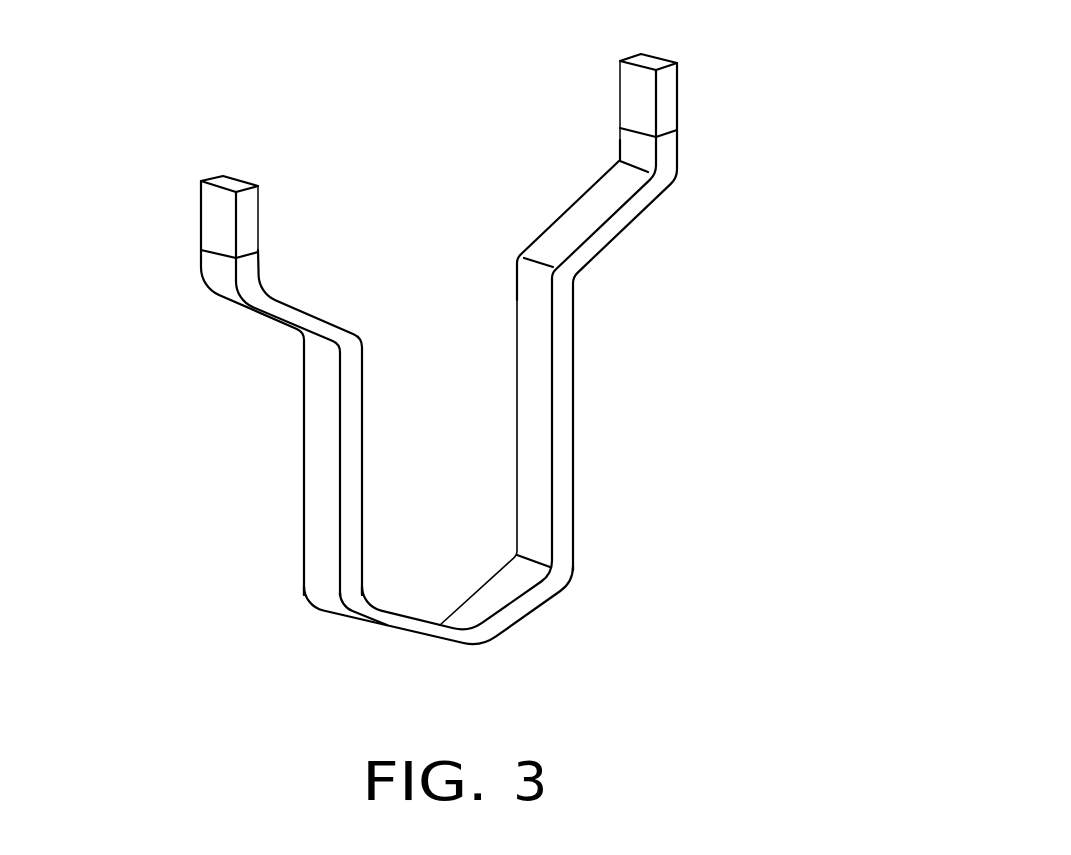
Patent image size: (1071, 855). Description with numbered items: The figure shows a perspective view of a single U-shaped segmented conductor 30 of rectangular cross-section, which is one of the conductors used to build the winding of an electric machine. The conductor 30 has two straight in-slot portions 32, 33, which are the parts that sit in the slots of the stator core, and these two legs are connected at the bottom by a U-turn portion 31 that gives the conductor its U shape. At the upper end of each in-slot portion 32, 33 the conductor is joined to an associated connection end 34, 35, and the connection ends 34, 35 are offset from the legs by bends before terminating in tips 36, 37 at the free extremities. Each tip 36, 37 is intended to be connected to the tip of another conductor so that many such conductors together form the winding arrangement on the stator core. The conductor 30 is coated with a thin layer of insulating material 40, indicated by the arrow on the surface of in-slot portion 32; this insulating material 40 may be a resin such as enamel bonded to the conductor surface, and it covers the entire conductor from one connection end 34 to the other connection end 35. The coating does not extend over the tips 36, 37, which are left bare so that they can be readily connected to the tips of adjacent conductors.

The segmented conductor 30 is at (425, 358).
The U-turn portion 31 is at (497, 628).
The in-slot portion 32 is at (320, 506).
The in-slot portion 33 is at (558, 353).
The connection end 34 is at (303, 320).
The connection end 35 is at (633, 207).
The tip 36 is at (215, 218).
The tip 37 is at (663, 93).
The insulating material 40 is at (317, 395).